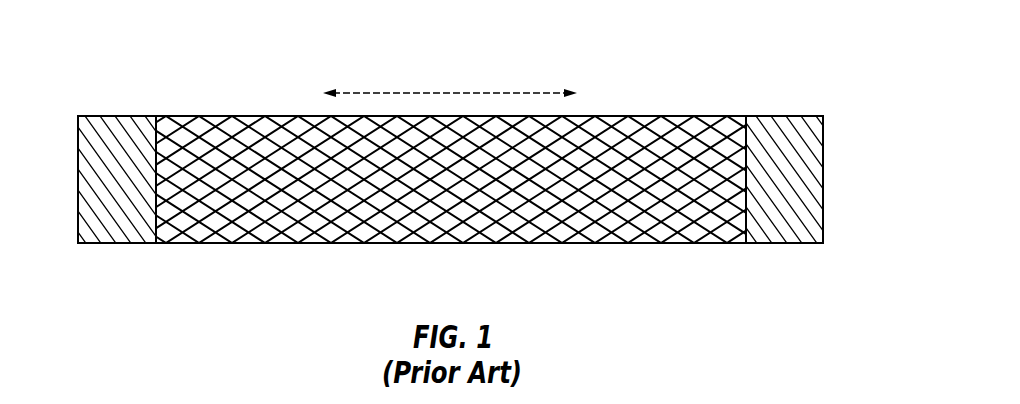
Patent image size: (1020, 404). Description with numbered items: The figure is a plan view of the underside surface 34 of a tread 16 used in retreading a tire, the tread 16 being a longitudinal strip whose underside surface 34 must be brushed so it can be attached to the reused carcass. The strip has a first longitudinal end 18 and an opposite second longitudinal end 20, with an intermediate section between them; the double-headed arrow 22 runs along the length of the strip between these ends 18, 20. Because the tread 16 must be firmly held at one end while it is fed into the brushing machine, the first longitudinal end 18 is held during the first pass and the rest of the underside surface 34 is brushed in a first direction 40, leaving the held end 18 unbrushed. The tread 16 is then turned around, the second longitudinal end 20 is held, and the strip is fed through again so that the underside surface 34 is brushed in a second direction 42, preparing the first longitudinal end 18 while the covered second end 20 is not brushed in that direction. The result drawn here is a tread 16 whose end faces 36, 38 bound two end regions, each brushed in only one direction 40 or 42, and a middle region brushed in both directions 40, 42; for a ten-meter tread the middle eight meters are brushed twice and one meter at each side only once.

The tread 16 is at (803, 48).
The first longitudinal end 18 is at (118, 230).
The second longitudinal end 20 is at (785, 232).
The longitudinal direction 22 is at (448, 93).
The underside surface 34 is at (451, 222).
The first end 36 is at (78, 180).
The second end 38 is at (823, 178).
The first direction 40 is at (785, 128).
The second direction 42 is at (114, 128).